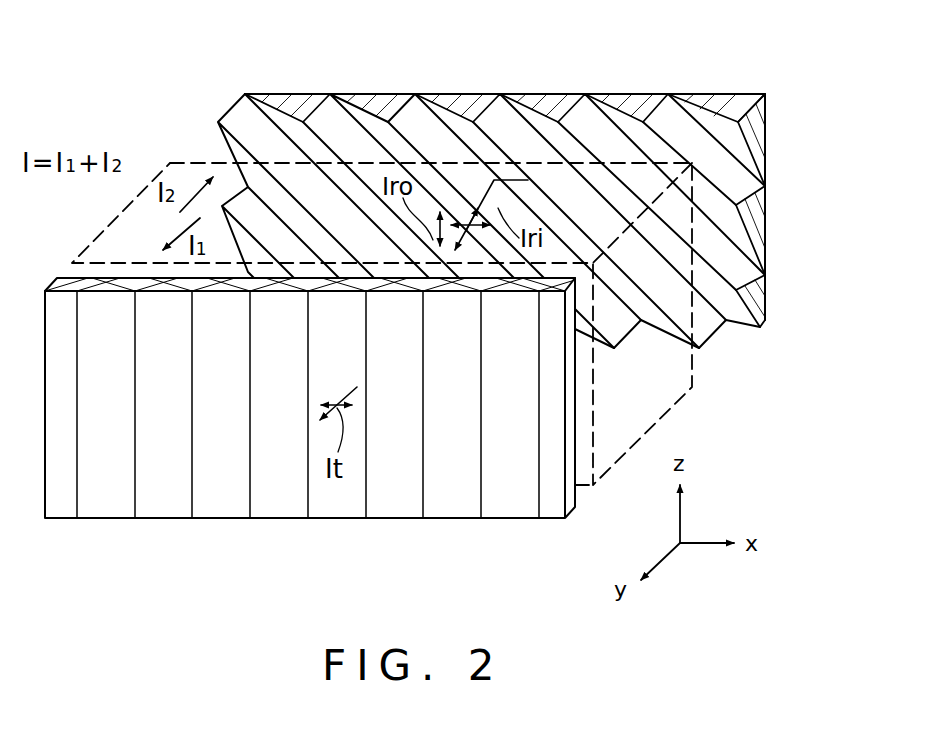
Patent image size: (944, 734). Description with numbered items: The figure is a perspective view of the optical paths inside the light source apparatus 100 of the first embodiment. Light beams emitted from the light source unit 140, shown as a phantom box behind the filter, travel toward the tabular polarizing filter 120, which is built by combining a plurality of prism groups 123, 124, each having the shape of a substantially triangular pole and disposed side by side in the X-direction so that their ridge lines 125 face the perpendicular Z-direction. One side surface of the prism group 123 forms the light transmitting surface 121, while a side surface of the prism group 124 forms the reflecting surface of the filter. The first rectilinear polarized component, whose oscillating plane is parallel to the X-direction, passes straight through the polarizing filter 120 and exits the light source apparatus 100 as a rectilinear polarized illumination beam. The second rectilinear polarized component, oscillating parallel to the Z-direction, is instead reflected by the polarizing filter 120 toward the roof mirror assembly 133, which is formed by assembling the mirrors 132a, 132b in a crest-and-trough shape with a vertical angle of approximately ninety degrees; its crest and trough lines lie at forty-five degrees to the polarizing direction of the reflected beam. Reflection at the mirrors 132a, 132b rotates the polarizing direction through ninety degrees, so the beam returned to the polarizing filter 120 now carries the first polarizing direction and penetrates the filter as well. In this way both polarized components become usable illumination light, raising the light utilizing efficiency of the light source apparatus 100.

The light source apparatus 100 is at (601, 27).
The roof mirror assembly 133 is at (500, 38).
The mirror 132a is at (363, 124).
The mirror 132b is at (422, 124).
The polarizing filter 120 is at (70, 510).
The light transmitting surface 121 is at (279, 494).
The prism group 123 is at (120, 506).
The prism group 124 is at (67, 268).
The ridge lines 125 is at (369, 491).
The light source unit 140 is at (680, 408).